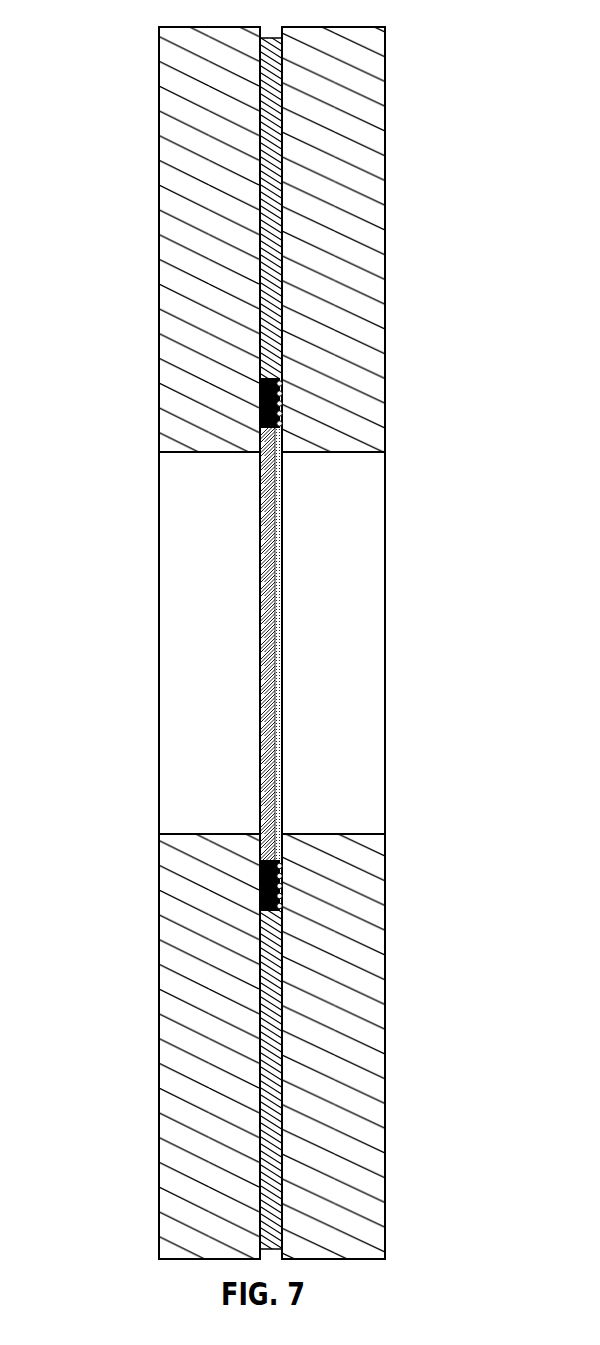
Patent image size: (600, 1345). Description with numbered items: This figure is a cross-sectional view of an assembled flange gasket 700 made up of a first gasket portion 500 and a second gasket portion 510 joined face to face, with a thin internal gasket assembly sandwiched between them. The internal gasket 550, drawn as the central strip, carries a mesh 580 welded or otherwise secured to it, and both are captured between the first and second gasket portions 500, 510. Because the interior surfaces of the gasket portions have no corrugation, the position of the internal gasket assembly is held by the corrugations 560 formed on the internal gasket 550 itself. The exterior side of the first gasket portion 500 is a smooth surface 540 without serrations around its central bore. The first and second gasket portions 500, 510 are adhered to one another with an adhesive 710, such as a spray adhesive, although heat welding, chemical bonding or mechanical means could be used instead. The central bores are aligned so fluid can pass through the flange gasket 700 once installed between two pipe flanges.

The flange gasket 700 is at (247, 643).
The first gasket portion 500 is at (196, 125).
The second gasket portion 510 is at (370, 169).
The smooth surface 540 is at (159, 588).
The internal gasket 550 is at (265, 392).
The corrugations 560 is at (280, 402).
The mesh 580 is at (282, 512).
The adhesive 710 is at (272, 153).